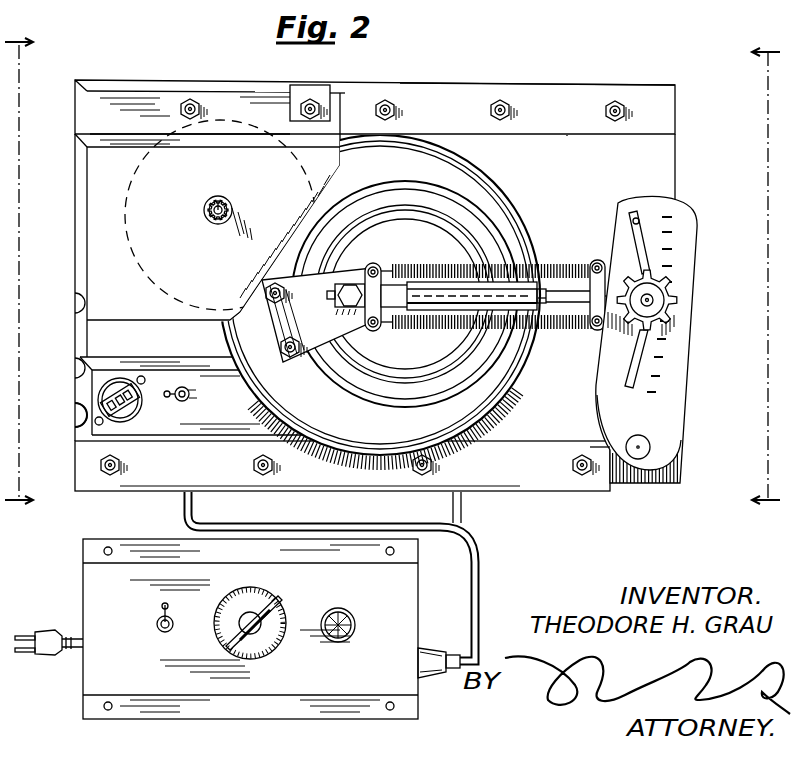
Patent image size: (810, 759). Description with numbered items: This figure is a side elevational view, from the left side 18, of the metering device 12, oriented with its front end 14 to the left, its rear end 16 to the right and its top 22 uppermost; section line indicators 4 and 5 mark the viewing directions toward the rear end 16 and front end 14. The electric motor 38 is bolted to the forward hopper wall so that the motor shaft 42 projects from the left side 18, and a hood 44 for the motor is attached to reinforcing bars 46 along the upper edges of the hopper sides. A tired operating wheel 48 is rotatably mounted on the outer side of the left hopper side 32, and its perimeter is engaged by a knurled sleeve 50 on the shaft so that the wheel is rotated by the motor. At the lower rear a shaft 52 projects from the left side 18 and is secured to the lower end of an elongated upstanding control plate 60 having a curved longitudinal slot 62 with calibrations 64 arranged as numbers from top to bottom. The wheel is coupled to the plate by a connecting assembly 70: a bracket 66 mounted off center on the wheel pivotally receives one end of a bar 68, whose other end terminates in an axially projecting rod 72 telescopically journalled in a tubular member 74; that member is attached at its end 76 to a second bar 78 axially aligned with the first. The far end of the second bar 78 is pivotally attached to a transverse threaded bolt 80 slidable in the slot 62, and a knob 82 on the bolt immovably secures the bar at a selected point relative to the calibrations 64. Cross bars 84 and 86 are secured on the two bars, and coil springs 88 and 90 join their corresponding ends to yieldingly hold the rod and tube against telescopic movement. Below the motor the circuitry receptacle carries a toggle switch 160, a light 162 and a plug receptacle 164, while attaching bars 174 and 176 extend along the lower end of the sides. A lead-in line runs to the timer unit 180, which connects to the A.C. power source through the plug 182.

The section line 4- 4 is at (766, 280).
The section line 5- 5 is at (19, 274).
The metering device 12 is at (537, 63).
The front end 14 is at (70, 218).
The rear end 16 is at (687, 167).
The left side 18 is at (537, 433).
The top 22 is at (446, 75).
The left hopper side 32 is at (665, 147).
The electric motor 38 is at (75, 262).
The motor shaft 42 is at (226, 200).
The hood 44 is at (135, 92).
The reinforcing bars 46 is at (568, 95).
The tired operating wheel 48 is at (470, 196).
The knurled sleeve 50 is at (212, 222).
The shaft 52 is at (650, 445).
The control plate 60 is at (668, 400).
The curved longitudinal slot 62 is at (645, 222).
The calibrations 64 is at (702, 239).
The bracket 66 is at (312, 278).
The bar 68 is at (357, 268).
The connecting assembly 70 is at (413, 245).
The rod 72 is at (566, 262).
The tubular member 74 is at (432, 330).
The end 76 is at (548, 310).
The second bar 78 is at (560, 332).
The threaded bolt 80 is at (652, 300).
The knob 82 is at (668, 292).
The cross bar 84 is at (366, 328).
The cross bar 86 is at (597, 328).
The coil spring 88 is at (540, 298).
The coil spring 90 is at (402, 322).
The toggle switch 160 is at (190, 395).
The light 162 is at (70, 425).
The plug receptacle 164 is at (105, 390).
The attaching bar 174 is at (493, 485).
The attaching bar 176 is at (485, 572).
The timer unit 180 is at (80, 672).
The plug 182 is at (40, 636).